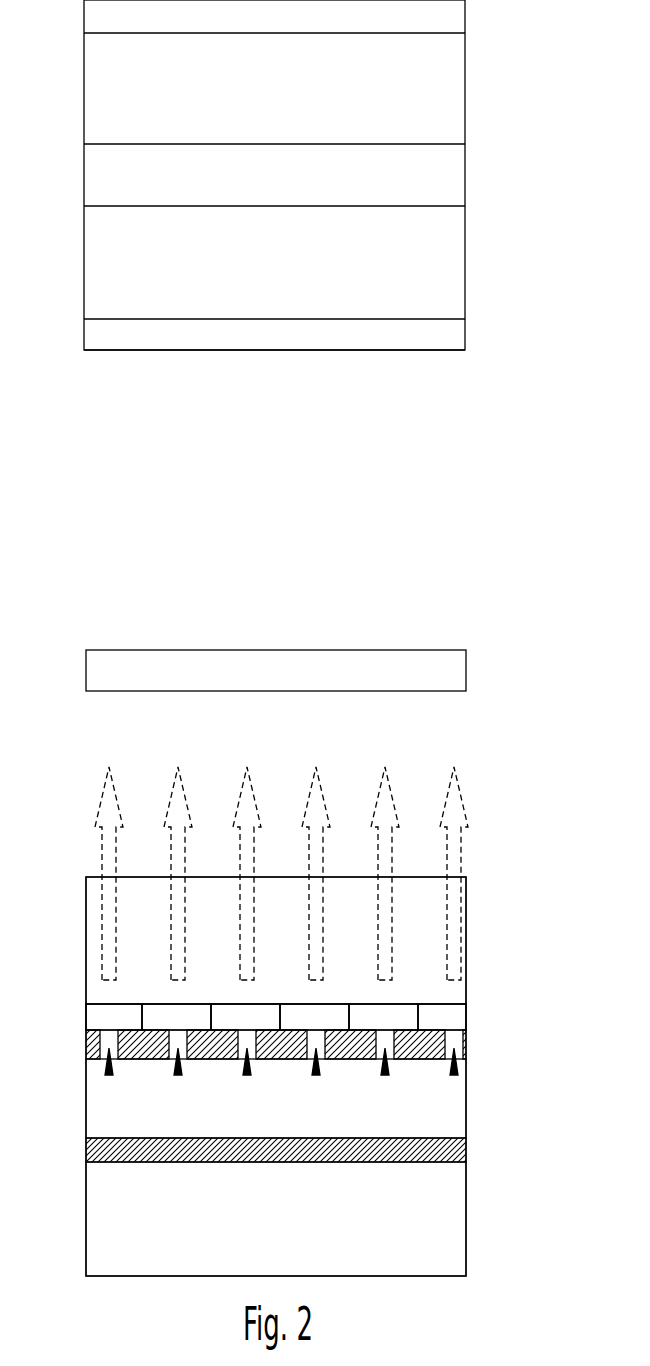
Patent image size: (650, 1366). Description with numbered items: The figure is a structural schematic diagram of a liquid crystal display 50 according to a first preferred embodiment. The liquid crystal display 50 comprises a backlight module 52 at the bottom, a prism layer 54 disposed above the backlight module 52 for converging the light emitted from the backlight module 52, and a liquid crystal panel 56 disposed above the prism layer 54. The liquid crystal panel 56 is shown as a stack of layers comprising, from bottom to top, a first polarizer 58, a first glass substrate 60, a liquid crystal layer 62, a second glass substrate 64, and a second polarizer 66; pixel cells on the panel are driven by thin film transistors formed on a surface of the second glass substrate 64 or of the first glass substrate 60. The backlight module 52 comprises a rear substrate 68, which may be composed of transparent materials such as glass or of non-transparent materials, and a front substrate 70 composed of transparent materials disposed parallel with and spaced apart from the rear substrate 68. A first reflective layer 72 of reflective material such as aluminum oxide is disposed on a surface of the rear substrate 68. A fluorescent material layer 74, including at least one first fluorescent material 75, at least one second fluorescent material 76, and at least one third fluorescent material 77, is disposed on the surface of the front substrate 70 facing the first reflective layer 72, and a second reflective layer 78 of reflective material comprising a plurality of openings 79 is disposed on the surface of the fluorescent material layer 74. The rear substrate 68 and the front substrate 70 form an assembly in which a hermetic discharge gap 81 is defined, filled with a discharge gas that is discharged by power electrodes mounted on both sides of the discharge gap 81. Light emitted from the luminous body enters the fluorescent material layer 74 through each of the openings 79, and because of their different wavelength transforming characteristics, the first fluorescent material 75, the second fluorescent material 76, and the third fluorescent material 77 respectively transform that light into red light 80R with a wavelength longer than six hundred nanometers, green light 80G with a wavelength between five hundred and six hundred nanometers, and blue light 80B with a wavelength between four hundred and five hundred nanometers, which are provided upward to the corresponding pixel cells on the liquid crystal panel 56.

The liquid crystal display 50 is at (470, 612).
The backlight module 52 is at (470, 1086).
The prism layer 54 is at (94, 672).
The liquid crystal panel 56 is at (477, 152).
The first polarizer 58 is at (94, 332).
The first glass substrate 60 is at (94, 270).
The liquid crystal layer 62 is at (94, 172).
The second glass substrate 64 is at (94, 95).
The second polarizer 66 is at (94, 15).
The rear substrate 68 is at (94, 1215).
The front substrate 70 is at (94, 955).
The first reflective layer 72 is at (94, 1150).
The fluorescent material layer 74 is at (88, 1020).
The first fluorescent material 75 is at (128, 1017).
The second fluorescent material 76 is at (153, 1017).
The third fluorescent material 77 is at (222, 1017).
The second reflective layer 78 is at (90, 1045).
The openings 79 is at (109, 1075).
The red light 80R is at (112, 812).
The green light 80G is at (181, 812).
The blue light 80B is at (250, 812).
The discharge gap 81 is at (460, 1115).